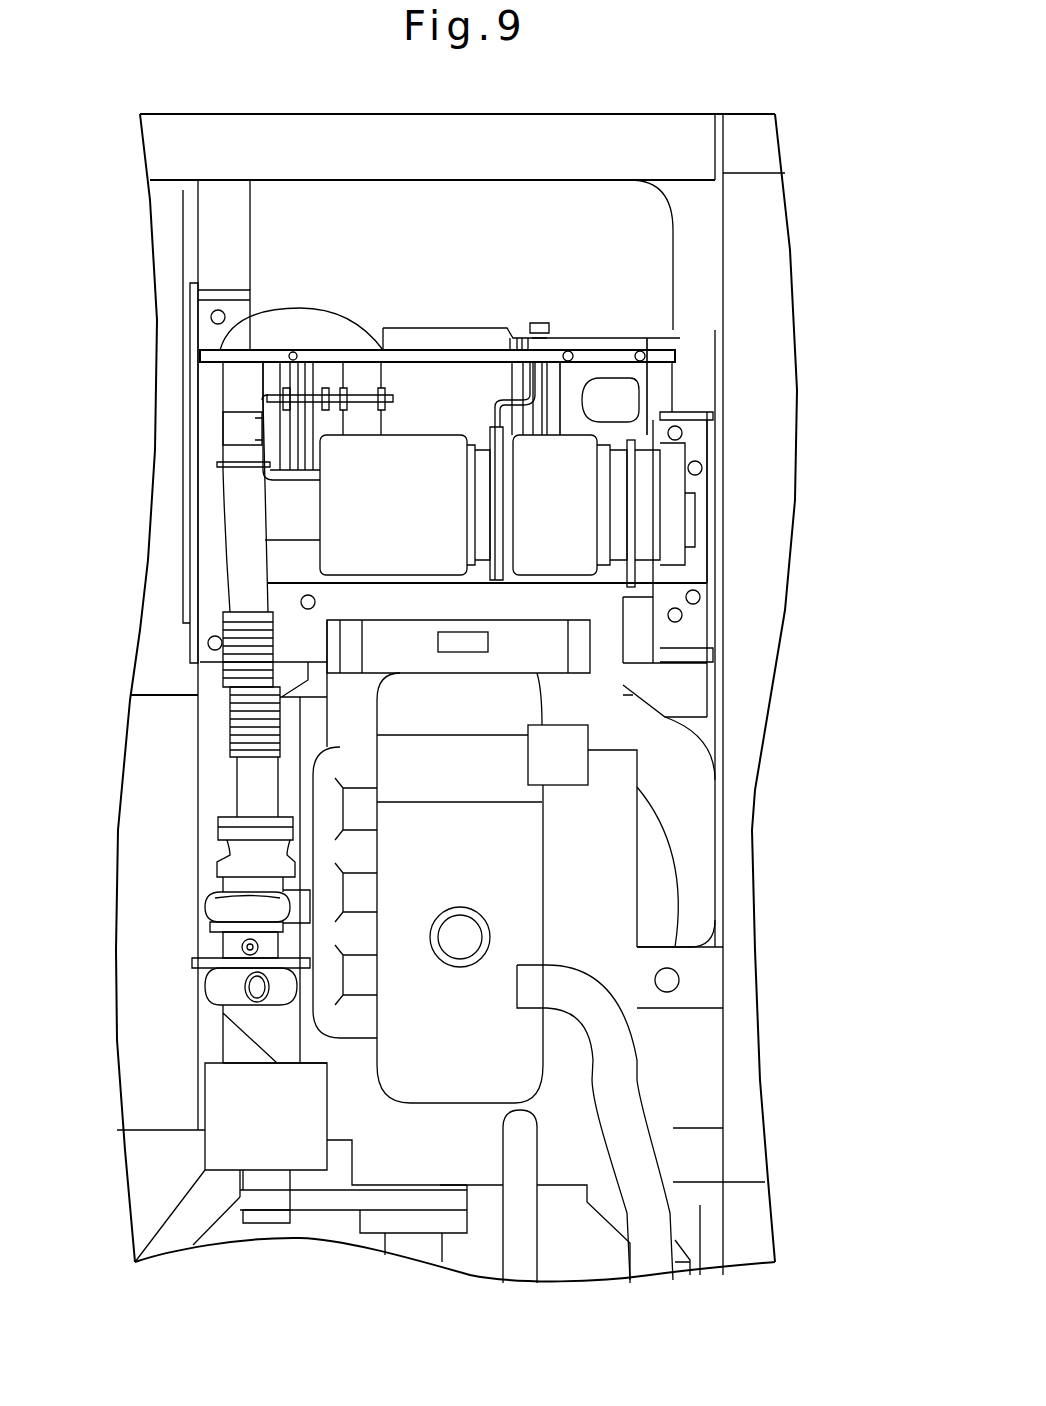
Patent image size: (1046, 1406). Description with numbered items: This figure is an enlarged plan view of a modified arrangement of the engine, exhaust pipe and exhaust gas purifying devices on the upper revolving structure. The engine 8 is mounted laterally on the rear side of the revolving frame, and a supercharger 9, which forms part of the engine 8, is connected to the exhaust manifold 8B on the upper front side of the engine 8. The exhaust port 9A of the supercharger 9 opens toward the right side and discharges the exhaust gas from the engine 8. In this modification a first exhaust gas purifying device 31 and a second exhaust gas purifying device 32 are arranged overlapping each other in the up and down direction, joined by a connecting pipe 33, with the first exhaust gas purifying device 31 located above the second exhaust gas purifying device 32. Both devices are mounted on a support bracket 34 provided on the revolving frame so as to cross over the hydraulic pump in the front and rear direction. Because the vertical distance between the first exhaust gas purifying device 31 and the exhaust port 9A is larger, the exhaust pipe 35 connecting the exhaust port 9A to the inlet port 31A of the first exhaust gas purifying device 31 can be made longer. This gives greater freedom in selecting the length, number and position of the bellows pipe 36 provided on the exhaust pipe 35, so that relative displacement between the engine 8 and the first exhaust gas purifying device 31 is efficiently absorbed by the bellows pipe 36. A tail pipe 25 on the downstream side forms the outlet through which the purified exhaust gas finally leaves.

The engine 8 is at (492, 870).
The exhaust manifold 8B is at (330, 1018).
The supercharger 9 is at (253, 910).
The exhaust port 9A is at (255, 828).
The tail pipe 25 is at (608, 400).
The first exhaust gas purifying device 31 is at (563, 497).
The inlet port 31A is at (360, 422).
The second exhaust gas purifying device 32 is at (455, 385).
The connecting pipe 33 is at (295, 510).
The support bracket 34 is at (222, 330).
The exhaust pipe 35 is at (250, 563).
The bellows pipe 36 is at (250, 657).